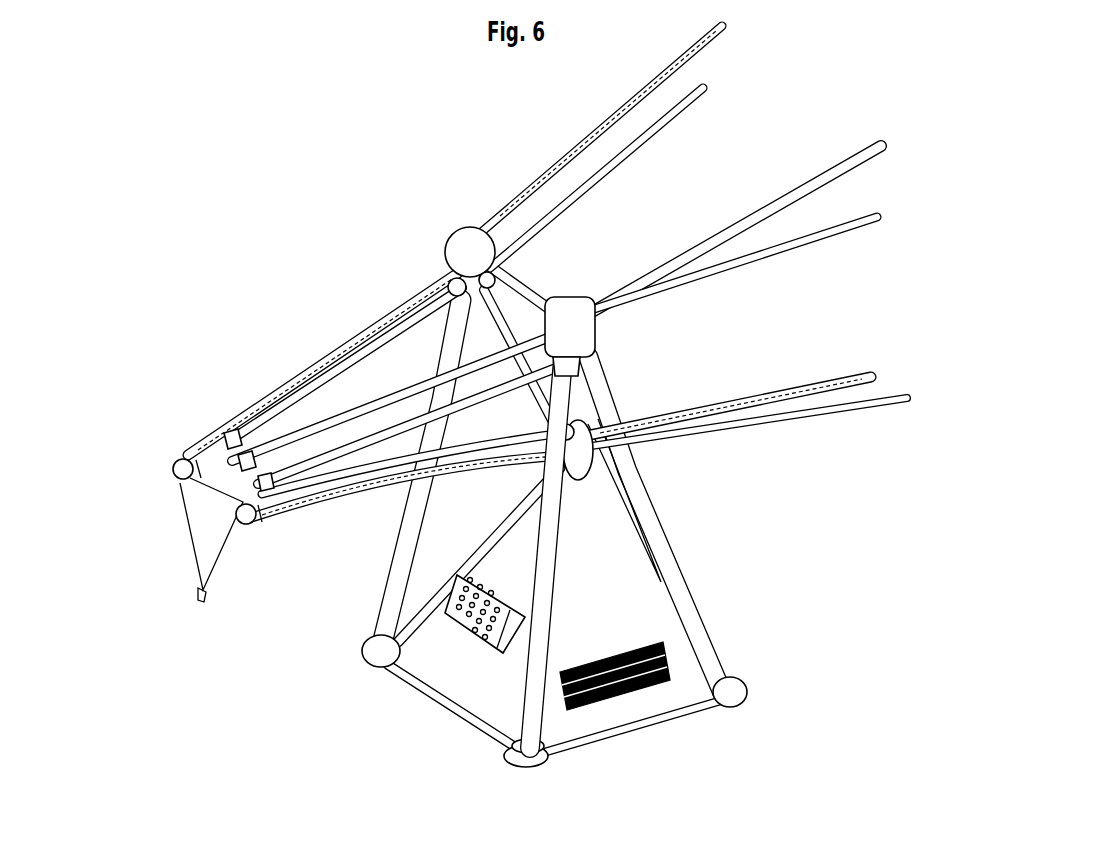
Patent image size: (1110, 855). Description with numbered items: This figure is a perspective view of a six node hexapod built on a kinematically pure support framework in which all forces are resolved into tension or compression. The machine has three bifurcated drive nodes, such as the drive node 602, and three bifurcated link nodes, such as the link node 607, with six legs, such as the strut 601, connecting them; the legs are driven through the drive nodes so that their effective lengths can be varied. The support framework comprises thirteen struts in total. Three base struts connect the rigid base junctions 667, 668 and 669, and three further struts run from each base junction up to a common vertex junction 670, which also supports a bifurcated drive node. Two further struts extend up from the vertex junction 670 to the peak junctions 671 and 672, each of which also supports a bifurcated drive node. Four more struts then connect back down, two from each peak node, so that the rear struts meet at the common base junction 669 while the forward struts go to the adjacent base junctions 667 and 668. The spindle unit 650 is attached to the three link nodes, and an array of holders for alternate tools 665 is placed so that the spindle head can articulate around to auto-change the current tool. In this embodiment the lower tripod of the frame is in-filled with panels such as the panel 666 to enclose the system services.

The strut 601 is at (320, 360).
The bifurcated drive node 602 is at (447, 255).
The bifurcated link node 607 is at (172, 462).
The spindle unit 650 is at (203, 537).
The array of holders for alternate tools 665 is at (477, 633).
The panel 666 is at (618, 617).
The rigid base junction 667 is at (363, 655).
The rigid base junction 668 is at (507, 763).
The rigid base junction 669 is at (740, 685).
The common vertex junction 670 is at (580, 447).
The peak junction 671 is at (517, 225).
The peak junction 672 is at (468, 232).